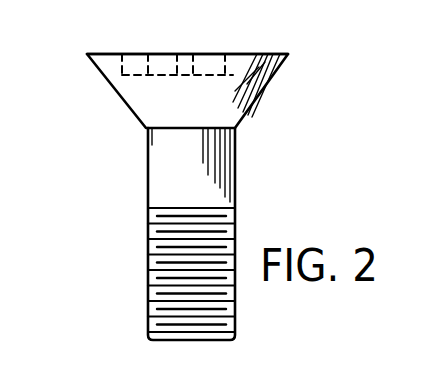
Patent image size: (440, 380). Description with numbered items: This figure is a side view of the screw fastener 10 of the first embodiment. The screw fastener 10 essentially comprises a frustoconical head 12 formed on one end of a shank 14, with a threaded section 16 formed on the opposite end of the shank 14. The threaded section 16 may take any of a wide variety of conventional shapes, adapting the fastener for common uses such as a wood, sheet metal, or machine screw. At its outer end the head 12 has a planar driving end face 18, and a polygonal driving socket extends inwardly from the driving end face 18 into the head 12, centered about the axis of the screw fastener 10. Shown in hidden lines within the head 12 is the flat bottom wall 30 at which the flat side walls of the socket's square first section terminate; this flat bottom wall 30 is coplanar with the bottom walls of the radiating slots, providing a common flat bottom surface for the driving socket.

The screw fastener 10 is at (198, 201).
The frustoconical head 12 is at (258, 94).
The shank 14 is at (235, 198).
The threaded section 16 is at (236, 320).
The planar driving end face 18 is at (288, 54).
The flat bottom wall 30 is at (185, 76).